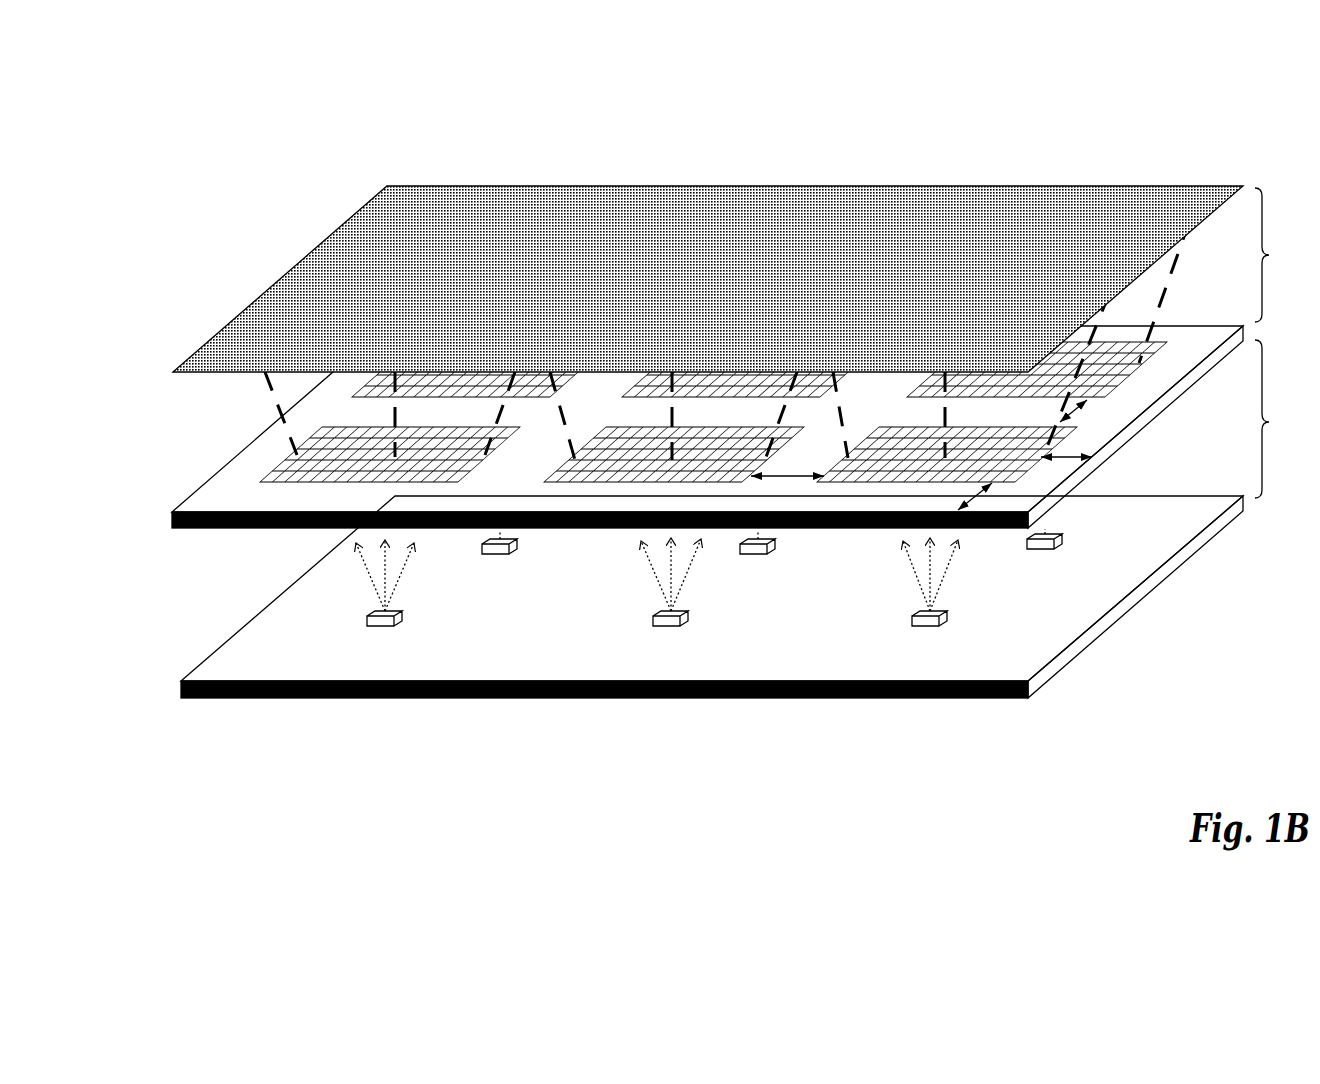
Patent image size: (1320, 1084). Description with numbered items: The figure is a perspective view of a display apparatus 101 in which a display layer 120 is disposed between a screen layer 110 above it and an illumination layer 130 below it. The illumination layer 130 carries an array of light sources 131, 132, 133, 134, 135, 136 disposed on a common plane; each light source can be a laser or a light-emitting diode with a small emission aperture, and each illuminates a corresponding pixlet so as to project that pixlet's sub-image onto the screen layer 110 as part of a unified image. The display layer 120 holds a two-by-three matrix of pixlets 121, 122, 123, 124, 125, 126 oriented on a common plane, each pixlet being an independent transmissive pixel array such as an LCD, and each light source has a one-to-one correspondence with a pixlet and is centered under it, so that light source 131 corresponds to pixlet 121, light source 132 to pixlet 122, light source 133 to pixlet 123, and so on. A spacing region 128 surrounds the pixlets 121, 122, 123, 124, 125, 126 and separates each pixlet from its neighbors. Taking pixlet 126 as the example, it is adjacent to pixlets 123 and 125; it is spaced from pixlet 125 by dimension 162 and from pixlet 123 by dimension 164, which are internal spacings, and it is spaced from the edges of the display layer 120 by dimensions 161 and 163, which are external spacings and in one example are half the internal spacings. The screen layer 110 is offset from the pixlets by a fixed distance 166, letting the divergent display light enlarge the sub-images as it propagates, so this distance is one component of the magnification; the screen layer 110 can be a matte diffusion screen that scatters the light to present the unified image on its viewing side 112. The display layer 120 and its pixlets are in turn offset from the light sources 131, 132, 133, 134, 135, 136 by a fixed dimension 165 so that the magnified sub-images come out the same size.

The display apparatus 101 is at (307, 107).
The screen layer 110 is at (694, 255).
The viewing side 112 is at (1025, 210).
The display layer 120 is at (659, 374).
The pixlet 121 is at (373, 402).
The pixlet 122 is at (640, 396).
The pixlet 123 is at (917, 387).
The pixlet 124 is at (410, 483).
The pixlet 125 is at (675, 483).
The pixlet 126 is at (892, 483).
The spacing region 128 is at (216, 497).
The illumination layer 130 is at (654, 597).
The light source 131 is at (488, 555).
The light source 132 is at (754, 556).
The light source 133 is at (1031, 551).
The light source 134 is at (373, 628).
The light source 135 is at (660, 630).
The light source 136 is at (920, 630).
The dimension 161 is at (959, 497).
The dimension 162 is at (792, 478).
The dimension 163 is at (1046, 462).
The dimension 164 is at (1086, 408).
The fixed dimension 165 is at (1283, 419).
The fixed distance 166 is at (1282, 255).